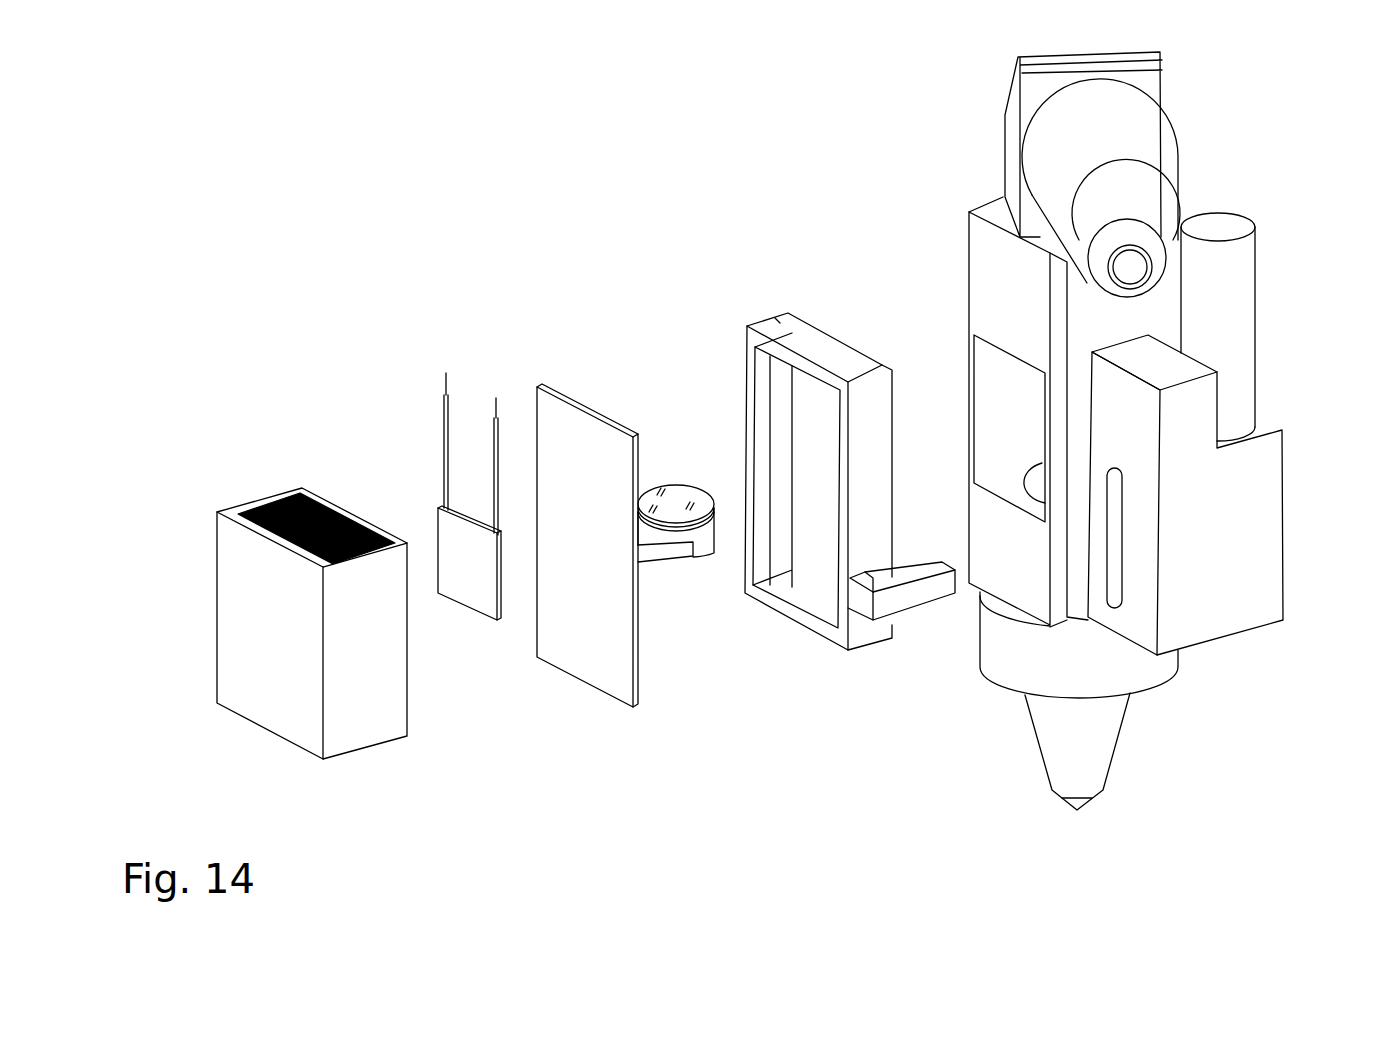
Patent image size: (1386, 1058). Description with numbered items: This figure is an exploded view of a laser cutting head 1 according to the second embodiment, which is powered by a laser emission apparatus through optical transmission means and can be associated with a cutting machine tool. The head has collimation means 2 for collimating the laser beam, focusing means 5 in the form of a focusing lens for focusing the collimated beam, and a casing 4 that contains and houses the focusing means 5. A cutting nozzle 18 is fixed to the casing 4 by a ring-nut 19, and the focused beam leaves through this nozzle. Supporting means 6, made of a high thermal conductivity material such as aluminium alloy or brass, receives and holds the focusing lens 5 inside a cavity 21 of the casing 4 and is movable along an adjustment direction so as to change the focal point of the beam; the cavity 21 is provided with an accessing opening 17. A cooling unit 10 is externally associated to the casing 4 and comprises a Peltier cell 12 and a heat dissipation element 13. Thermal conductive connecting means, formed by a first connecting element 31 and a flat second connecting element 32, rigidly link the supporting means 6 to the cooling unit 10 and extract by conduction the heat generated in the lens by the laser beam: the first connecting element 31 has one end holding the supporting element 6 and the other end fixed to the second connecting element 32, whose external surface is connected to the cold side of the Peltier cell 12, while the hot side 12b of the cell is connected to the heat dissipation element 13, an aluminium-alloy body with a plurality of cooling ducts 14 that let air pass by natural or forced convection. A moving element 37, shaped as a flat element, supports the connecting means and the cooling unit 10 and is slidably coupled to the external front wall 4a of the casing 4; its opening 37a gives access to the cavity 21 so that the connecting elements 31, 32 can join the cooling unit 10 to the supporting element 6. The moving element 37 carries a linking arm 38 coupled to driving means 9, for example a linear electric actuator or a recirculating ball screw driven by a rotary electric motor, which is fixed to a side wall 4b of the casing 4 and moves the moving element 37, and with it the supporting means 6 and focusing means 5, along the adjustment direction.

The laser cutting head 1 is at (350, 122).
The cooling unit 10 is at (163, 408).
The heat dissipation element 13 is at (262, 618).
The cooling ducts 14 is at (245, 503).
The Peltier cell 12 is at (470, 613).
The hot side 12b is at (452, 544).
The second connecting element 32 is at (585, 613).
The focusing means 5 is at (673, 495).
The first connecting element 31 is at (657, 546).
The supporting means 6 is at (703, 533).
The moving element 37 is at (759, 433).
The opening 37a is at (763, 419).
The linking arm 38 is at (903, 598).
The casing 4 is at (1058, 618).
The external wall 4a is at (997, 272).
The cavity 21 is at (998, 385).
The accessing opening 17 is at (1010, 522).
The collimation means 2 is at (1137, 125).
The side wall 4b is at (1142, 317).
The driving means 9 is at (1258, 496).
The ring-nut 19 is at (1140, 678).
The cutting nozzle 18 is at (1090, 767).